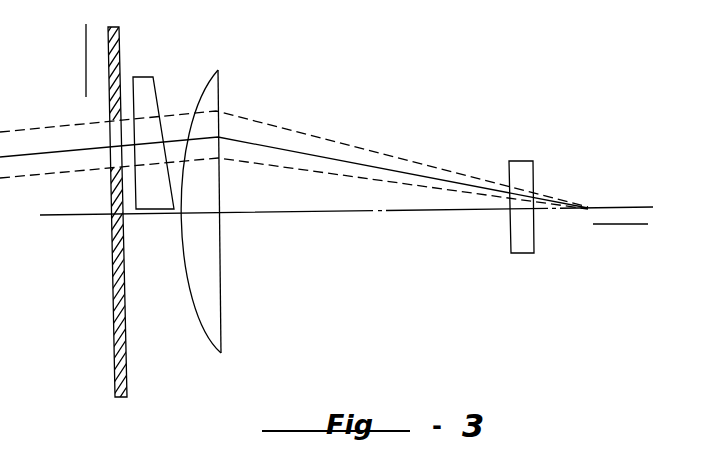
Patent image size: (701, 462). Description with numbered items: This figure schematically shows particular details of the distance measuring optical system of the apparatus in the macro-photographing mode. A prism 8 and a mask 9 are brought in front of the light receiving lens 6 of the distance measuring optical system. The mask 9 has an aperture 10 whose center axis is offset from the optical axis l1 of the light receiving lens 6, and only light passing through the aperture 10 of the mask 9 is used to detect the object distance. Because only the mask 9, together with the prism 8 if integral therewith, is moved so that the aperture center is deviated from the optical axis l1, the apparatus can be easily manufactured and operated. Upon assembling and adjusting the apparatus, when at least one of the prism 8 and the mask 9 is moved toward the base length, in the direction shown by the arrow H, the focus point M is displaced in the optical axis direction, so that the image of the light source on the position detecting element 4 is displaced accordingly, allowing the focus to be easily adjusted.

The position detecting element 4 is at (522, 161).
The light receiving lens 6 is at (220, 92).
The prism 8 is at (153, 77).
The mask 9 is at (115, 298).
The aperture 10 is at (108, 129).
The arrow H is at (84, 60).
The focus point M is at (603, 207).
The optical axis l1 is at (392, 214).